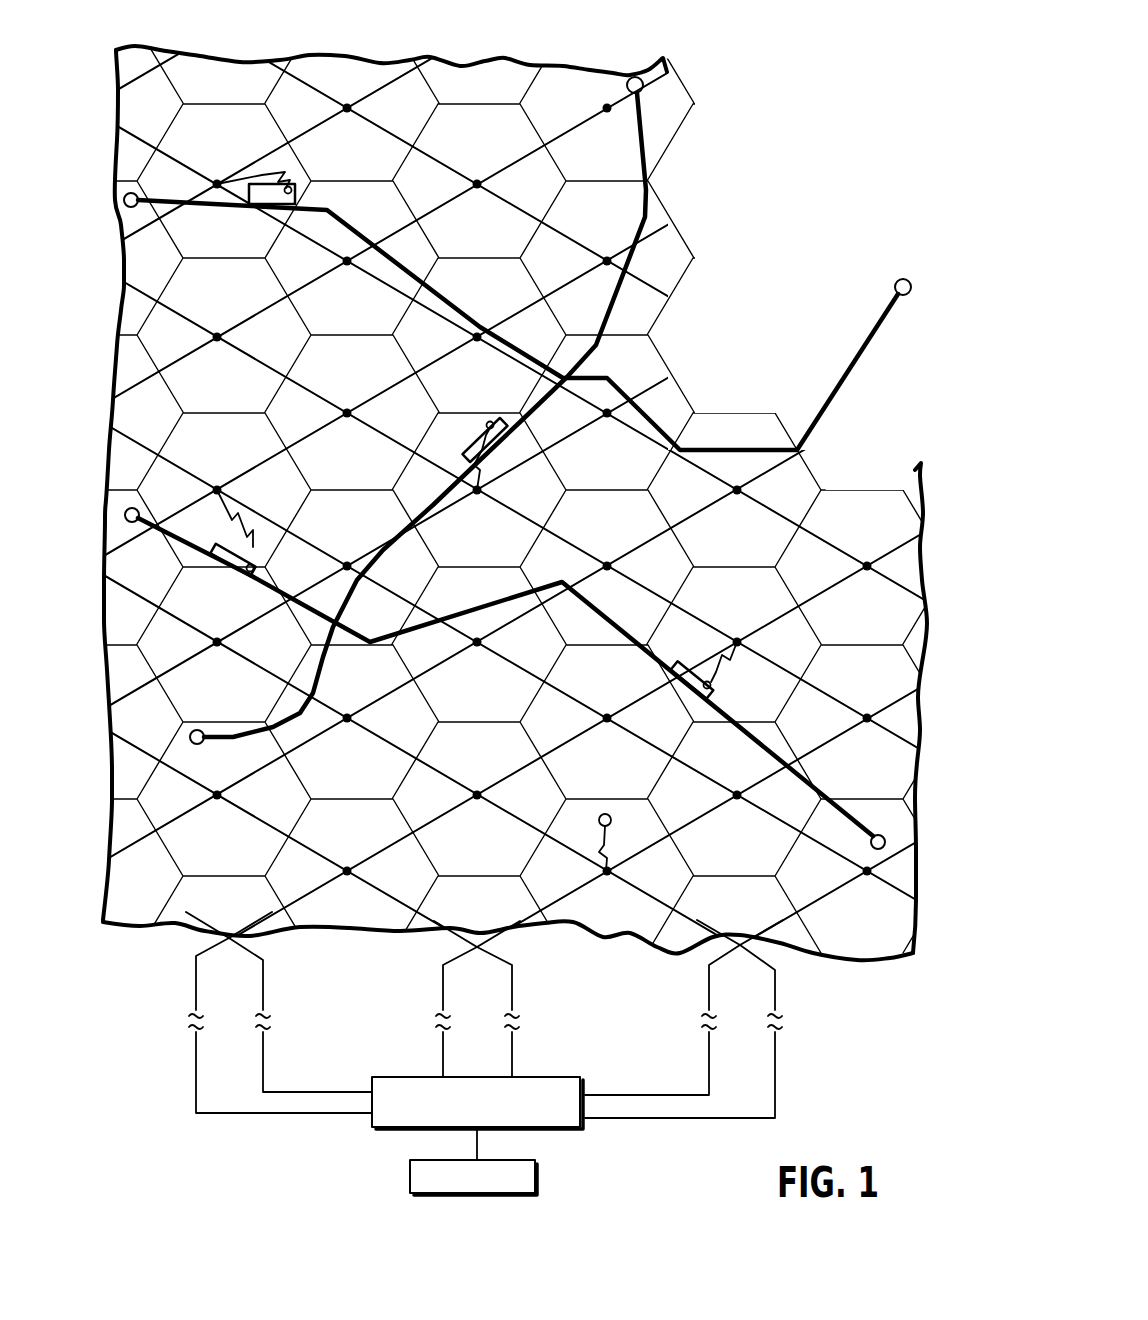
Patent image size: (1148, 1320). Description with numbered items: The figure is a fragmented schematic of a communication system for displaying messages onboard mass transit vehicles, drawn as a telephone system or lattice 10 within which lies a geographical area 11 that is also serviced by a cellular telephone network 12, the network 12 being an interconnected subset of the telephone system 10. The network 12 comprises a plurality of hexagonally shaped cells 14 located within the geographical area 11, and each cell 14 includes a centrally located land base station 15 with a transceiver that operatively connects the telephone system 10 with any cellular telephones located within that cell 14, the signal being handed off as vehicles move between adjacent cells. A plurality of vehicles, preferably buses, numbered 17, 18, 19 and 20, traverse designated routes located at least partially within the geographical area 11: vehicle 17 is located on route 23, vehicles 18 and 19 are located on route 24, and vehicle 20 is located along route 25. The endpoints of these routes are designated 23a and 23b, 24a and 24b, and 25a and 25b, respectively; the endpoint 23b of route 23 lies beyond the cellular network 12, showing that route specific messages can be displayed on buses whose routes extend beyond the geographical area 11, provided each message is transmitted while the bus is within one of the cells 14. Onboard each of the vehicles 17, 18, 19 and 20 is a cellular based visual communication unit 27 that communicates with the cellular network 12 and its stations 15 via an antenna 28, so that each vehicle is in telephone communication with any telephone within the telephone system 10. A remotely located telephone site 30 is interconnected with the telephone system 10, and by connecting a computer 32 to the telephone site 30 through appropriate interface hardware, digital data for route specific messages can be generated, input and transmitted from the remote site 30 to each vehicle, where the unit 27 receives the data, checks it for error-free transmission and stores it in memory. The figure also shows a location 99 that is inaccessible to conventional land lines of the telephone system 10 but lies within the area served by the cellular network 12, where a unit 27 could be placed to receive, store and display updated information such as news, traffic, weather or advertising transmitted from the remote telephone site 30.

The telephone system 10 is at (180, 1016).
The geographical area 11 is at (500, 57).
The cellular telephone network 12 is at (285, 367).
The cells 14 is at (462, 116).
The land base station 15 is at (220, 183).
The vehicle 17 is at (248, 205).
The vehicle 18 is at (213, 547).
The vehicle 19 is at (686, 658).
The vehicle 20 is at (463, 455).
The route 23 is at (462, 314).
The endpoint of route 23 23a is at (138, 196).
The endpoint of route 23 23b is at (896, 278).
The route 24 is at (307, 613).
The endpoint of route 24 24a is at (137, 509).
The endpoint of route 24 24b is at (883, 835).
The route 25 is at (435, 507).
The endpoint of route 25 25a is at (197, 744).
The endpoint of route 25 25b is at (638, 68).
The cellular based visual communication unit 27 is at (298, 192).
The antenna 28 is at (297, 167).
The remote telephone site 30 is at (563, 1078).
The computer 32 is at (540, 1182).
The location 99 is at (609, 810).